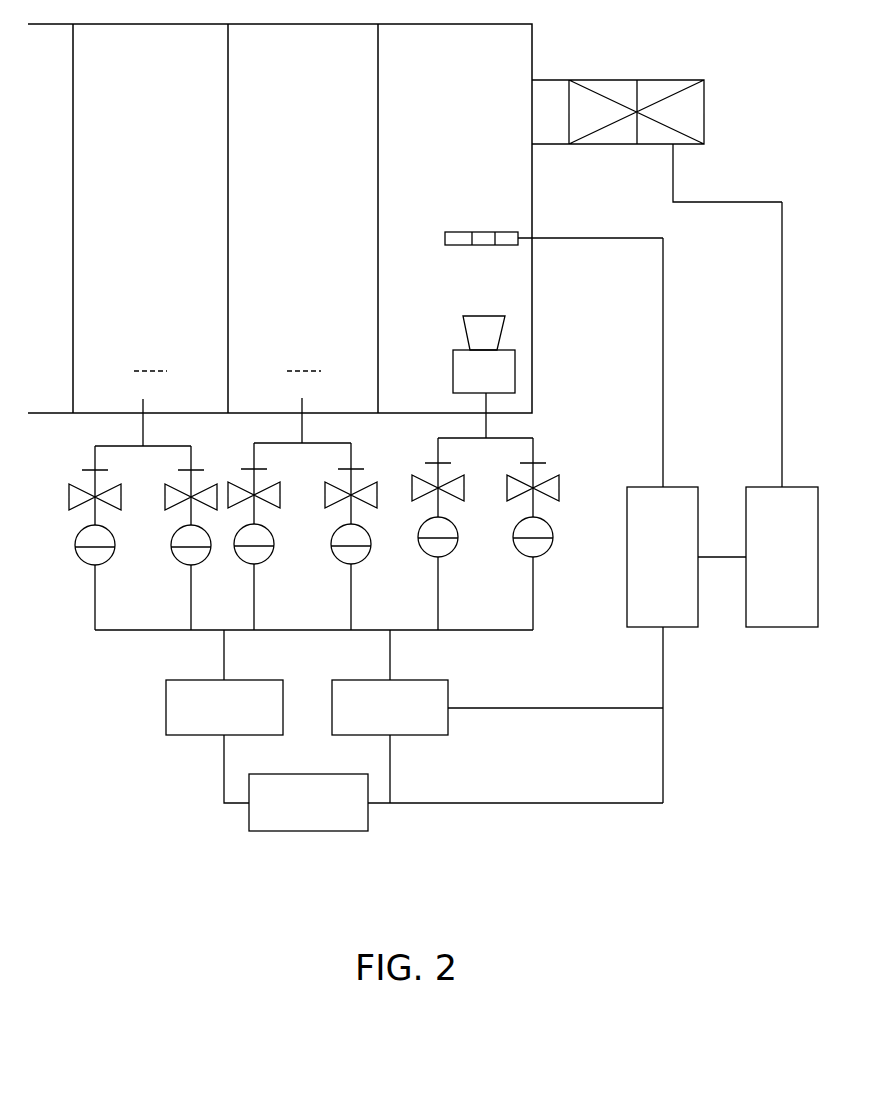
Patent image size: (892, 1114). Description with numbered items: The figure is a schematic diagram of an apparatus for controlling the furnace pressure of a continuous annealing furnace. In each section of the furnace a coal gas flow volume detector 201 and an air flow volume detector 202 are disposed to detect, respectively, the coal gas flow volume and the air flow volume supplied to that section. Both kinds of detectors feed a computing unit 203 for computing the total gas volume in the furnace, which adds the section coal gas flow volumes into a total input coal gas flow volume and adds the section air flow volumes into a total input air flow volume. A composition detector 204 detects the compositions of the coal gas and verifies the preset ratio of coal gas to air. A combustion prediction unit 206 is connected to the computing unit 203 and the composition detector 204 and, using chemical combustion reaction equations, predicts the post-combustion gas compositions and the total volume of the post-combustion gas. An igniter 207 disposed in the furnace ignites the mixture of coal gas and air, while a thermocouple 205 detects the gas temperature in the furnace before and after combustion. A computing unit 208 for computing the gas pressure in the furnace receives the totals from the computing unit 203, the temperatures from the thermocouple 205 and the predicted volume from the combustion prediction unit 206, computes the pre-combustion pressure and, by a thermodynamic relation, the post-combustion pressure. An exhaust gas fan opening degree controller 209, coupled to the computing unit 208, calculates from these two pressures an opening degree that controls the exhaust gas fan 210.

The coal gas flow volume detector 201 is at (428, 553).
The air flow volume detector 202 is at (522, 553).
The computing unit for computing a total gas volume in the furnace 203 is at (497, 741).
The composition detector 204 is at (224, 741).
The thermocouple 205 is at (482, 235).
The combustion prediction unit 206 is at (456, 802).
The igniter 207 is at (503, 375).
The computing unit for computing a gas pressure in the furnace 208 is at (686, 520).
The exhaust gas fan opening degree controller 209 is at (782, 414).
The exhaust gas fan 210 is at (617, 88).